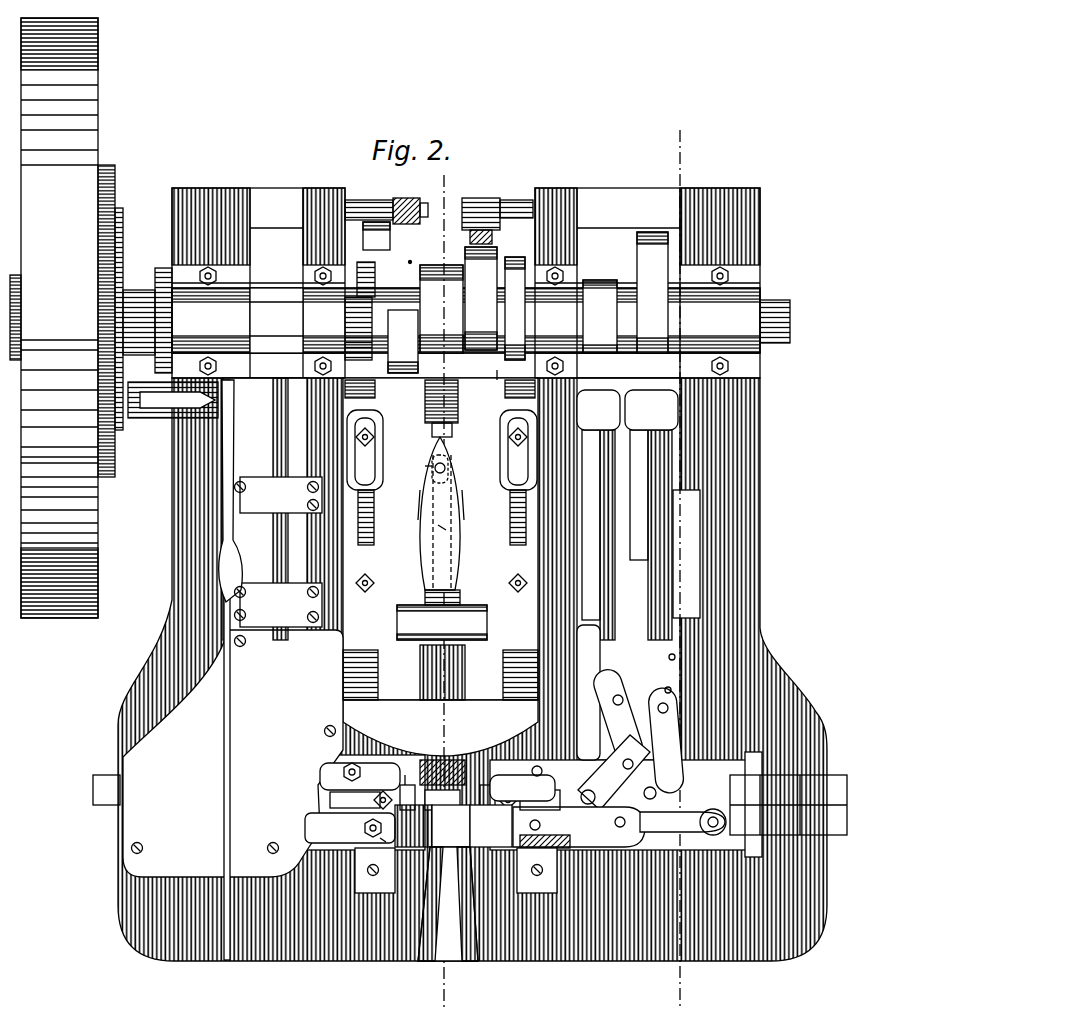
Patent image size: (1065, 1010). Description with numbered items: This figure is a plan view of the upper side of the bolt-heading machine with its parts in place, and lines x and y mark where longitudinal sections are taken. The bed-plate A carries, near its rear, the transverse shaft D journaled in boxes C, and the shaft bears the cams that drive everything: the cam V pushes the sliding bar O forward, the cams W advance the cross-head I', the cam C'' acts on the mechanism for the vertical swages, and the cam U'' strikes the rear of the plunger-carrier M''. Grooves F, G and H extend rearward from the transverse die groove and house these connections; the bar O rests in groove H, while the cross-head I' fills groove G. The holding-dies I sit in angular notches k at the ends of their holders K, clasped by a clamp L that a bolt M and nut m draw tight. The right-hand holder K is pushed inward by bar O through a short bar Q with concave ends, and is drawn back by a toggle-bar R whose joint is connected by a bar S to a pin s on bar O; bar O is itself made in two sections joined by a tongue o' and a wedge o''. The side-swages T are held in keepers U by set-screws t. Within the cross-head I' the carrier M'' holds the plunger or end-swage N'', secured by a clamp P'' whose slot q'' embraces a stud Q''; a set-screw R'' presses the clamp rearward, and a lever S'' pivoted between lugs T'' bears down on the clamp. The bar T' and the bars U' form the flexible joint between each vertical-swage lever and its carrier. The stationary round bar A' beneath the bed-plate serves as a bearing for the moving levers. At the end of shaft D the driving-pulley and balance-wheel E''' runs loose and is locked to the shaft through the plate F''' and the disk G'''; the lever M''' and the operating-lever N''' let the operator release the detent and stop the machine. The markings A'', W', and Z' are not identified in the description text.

The bed-plate A is at (472, 669).
The boxes C is at (464, 321).
The shaft D is at (464, 320).
The groove F is at (258, 283).
The groove H is at (647, 283).
The cams W is at (433, 287).
The cam V is at (652, 292).
The driving-pulley and balance-wheel E''' is at (54, 318).
The circular metal plate F''' is at (115, 310).
The metal disk G''' is at (131, 319).
The lever M''' is at (173, 411).
The cam C'' is at (370, 311).
The eccentric A'' is at (403, 341).
The cam U'' is at (441, 309).
The groove G is at (419, 259).
The shaft or round bar A' is at (481, 298).
The cam W' is at (515, 299).
The pin Z' is at (498, 379).
The section line x x is at (680, 563).
The section line y y is at (448, 584).
The set-screw R'' is at (453, 408).
The cross-head I' is at (442, 501).
The lever S'' is at (440, 513).
The stud or pin Q'' is at (457, 469).
The longitudinal vertical slot q'' is at (420, 463).
The block or carrier M'' is at (443, 505).
The plate or clamp P'' is at (432, 534).
The lugs T'' is at (440, 615).
The plunger or end-swage N'' is at (440, 672).
The bar O is at (448, 509).
The lever N''' is at (233, 670).
The bar S is at (637, 730).
The stud or pin s is at (640, 699).
The bar Q is at (617, 773).
The tongue o' is at (673, 685).
The wedge o'' is at (679, 652).
The holder or carrier K is at (470, 811).
The toggle-bar R is at (683, 812).
The angular notch k is at (554, 840).
The clamp L is at (352, 802).
The bolt M is at (374, 800).
The nut m is at (388, 842).
The slot w is at (445, 800).
The set-screw t is at (447, 804).
The bar T' is at (406, 797).
The side-swages T is at (484, 797).
The bars U' is at (405, 774).
The block or keeper U is at (522, 783).
The holding-dies I is at (453, 826).